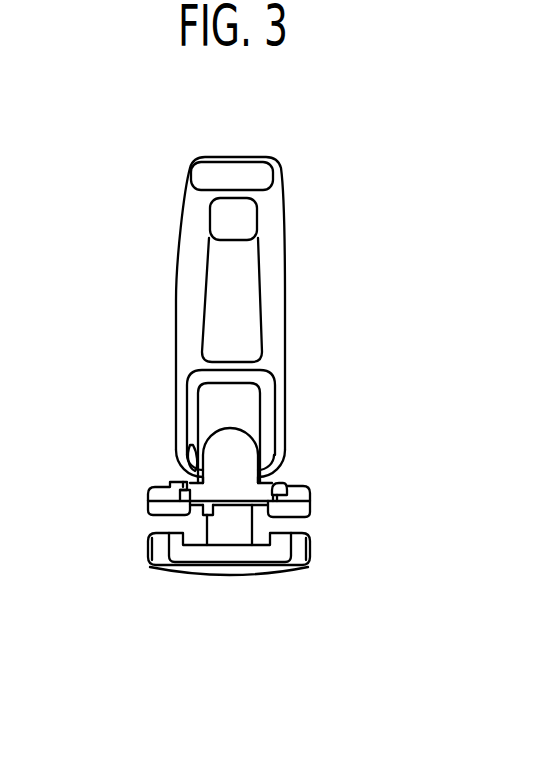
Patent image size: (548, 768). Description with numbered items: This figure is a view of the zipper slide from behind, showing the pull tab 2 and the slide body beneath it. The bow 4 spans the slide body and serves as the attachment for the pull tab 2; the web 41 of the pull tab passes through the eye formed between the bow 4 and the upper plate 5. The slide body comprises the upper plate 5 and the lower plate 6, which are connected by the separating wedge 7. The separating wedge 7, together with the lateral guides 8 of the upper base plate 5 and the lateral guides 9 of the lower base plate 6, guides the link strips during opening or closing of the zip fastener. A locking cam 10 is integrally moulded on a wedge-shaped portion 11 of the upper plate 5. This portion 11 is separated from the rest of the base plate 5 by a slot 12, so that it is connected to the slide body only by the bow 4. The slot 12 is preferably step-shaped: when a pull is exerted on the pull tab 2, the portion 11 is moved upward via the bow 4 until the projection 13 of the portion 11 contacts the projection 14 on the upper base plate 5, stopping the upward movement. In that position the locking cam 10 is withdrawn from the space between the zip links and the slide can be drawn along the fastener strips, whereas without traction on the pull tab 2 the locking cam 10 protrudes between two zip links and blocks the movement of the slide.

The pull tab 2 is at (275, 282).
The bow 4 is at (245, 447).
The web 41 is at (192, 478).
The upper plate 5 is at (160, 493).
The lower plate 6 is at (168, 542).
The separating wedge 7 is at (245, 532).
The lateral guides 8 is at (177, 515).
The lateral guides 9 is at (152, 565).
The locking cam 10 is at (215, 515).
The wedge-shaped portion 11 is at (277, 470).
The slot 12 is at (183, 480).
The projection 13 is at (147, 502).
The projection 14 is at (175, 483).